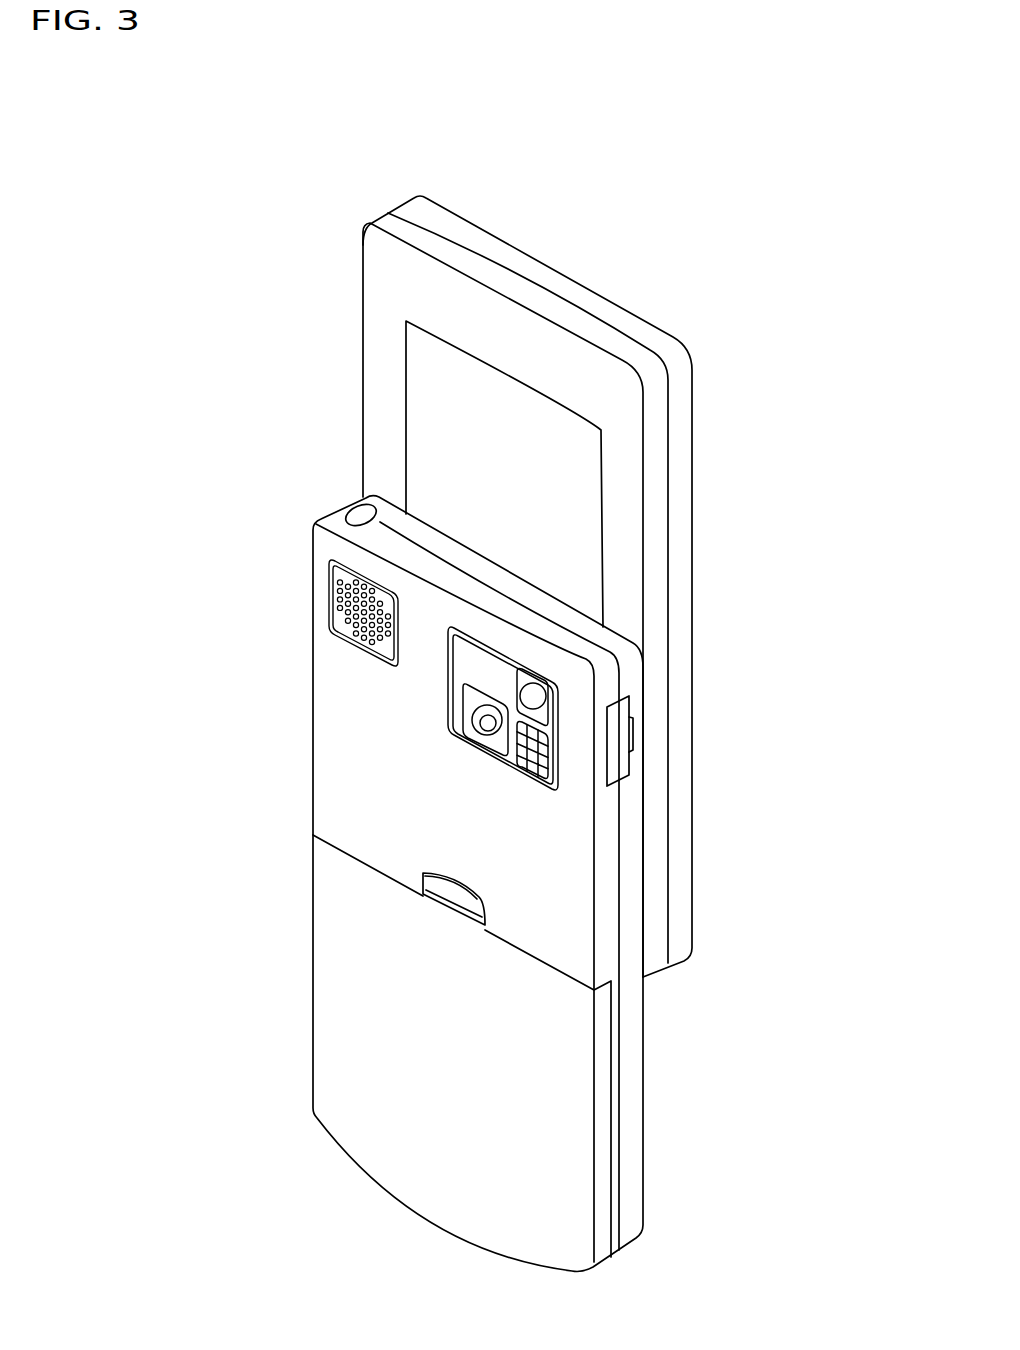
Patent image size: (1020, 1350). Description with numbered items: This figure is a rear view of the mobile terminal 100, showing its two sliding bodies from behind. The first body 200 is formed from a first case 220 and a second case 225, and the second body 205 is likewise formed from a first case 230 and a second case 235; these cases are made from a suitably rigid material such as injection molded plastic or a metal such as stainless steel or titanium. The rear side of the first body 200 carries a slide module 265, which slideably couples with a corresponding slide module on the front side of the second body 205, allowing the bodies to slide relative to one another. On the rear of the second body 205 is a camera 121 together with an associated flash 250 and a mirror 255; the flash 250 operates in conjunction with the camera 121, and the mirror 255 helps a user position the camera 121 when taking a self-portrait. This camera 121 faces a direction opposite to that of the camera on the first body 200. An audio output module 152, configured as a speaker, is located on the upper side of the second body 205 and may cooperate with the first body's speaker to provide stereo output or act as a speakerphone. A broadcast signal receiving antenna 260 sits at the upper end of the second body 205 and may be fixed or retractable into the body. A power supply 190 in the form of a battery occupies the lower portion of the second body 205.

The mobile terminal 100 is at (667, 235).
The first body 200 is at (327, 365).
The second body 205 is at (288, 727).
The first case 220 is at (412, 207).
The second case 225 is at (393, 223).
The slide module 265 is at (417, 451).
The broadcast signal receiving antenna 260 is at (350, 509).
The audio output module 152 is at (332, 607).
The camera 121 is at (489, 722).
The flash 250 is at (552, 770).
The mirror 255 is at (535, 692).
The second case 235 is at (605, 939).
The first case 230 is at (635, 1010).
The power supply 190 is at (330, 937).